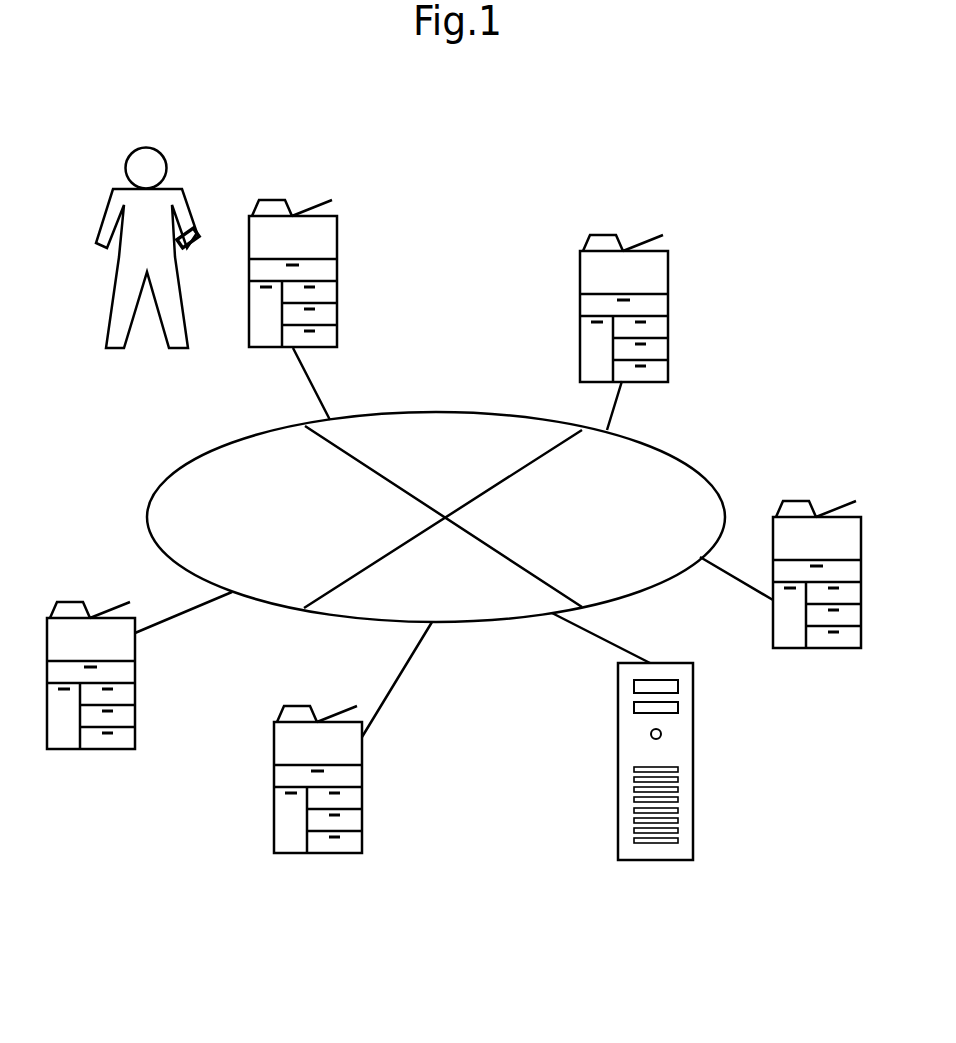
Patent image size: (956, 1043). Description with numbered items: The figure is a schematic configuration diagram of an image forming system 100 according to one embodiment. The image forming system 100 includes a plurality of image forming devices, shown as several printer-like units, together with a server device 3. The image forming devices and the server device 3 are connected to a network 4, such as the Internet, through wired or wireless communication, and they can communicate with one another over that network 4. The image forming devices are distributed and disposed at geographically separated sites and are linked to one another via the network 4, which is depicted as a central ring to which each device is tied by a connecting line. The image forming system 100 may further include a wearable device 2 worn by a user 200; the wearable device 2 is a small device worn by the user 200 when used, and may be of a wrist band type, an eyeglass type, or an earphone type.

The wearable device 2 is at (198, 230).
The server device 3 is at (672, 662).
The network 4 is at (439, 412).
The image forming system 100 is at (780, 161).
The user 200 is at (148, 149).